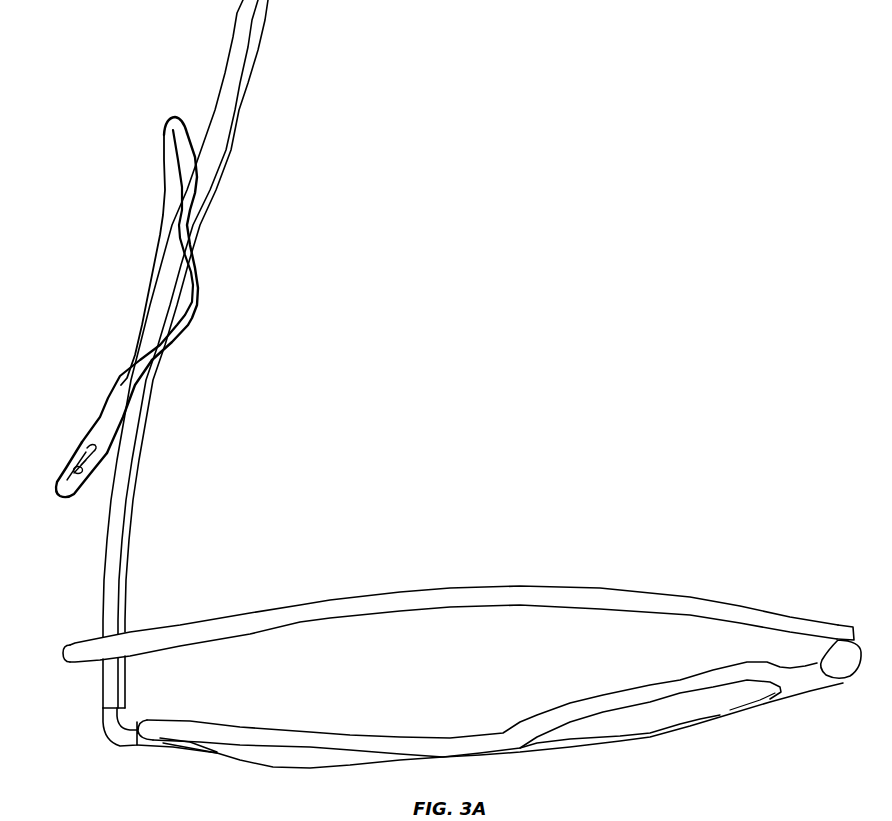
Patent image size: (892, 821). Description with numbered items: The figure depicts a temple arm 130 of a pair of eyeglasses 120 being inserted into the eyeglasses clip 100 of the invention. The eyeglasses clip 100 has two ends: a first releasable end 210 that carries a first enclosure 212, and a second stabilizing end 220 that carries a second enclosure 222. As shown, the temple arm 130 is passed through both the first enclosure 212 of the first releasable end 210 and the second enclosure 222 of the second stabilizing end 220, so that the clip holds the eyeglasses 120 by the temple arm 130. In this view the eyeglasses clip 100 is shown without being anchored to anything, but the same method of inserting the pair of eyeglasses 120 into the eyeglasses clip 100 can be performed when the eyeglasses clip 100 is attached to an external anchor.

The eyeglasses clip 100 is at (207, 292).
The pair of eyeglasses 120 is at (208, 784).
The temple arm 130 is at (233, 73).
The first releasable end 210 is at (82, 442).
The first enclosure 212 is at (113, 423).
The second stabilizing end 220 is at (170, 128).
The second enclosure 222 is at (183, 182).